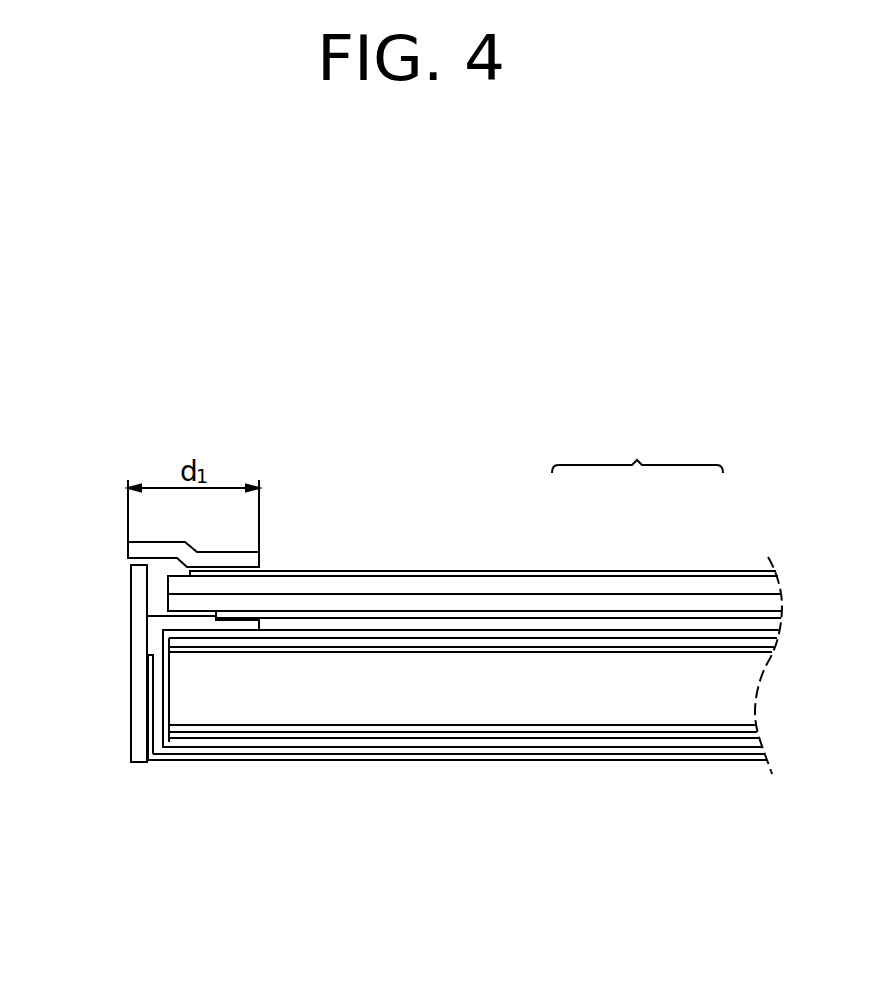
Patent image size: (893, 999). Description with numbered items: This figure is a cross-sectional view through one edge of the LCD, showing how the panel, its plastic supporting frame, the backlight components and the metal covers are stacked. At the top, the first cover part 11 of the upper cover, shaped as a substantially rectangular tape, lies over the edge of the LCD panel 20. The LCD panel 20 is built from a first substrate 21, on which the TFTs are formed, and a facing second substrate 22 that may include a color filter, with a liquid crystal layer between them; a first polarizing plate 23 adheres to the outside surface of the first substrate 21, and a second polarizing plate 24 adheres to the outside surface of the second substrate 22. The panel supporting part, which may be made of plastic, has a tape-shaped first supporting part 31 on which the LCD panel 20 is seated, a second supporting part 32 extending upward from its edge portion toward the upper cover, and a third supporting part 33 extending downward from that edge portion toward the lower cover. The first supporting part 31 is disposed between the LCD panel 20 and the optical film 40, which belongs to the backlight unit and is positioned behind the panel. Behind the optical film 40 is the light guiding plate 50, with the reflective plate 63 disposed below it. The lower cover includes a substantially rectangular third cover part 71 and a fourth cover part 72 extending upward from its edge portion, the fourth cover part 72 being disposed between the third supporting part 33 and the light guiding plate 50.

The first cover part 11 is at (259, 556).
The LCD panel 20 is at (637, 450).
The first substrate 21 is at (615, 600).
The second substrate 22 is at (678, 583).
The first polarizing plate 23 is at (732, 610).
The second polarizing plate 24 is at (552, 570).
The first supporting part 31 is at (190, 623).
The second supporting part 32 is at (132, 584).
The third supporting part 33 is at (132, 718).
The optical film 40 is at (442, 638).
The light guiding plate 50 is at (308, 708).
The reflective plate 63 is at (490, 735).
The third cover part 71 is at (395, 755).
The fourth cover part 72 is at (148, 677).